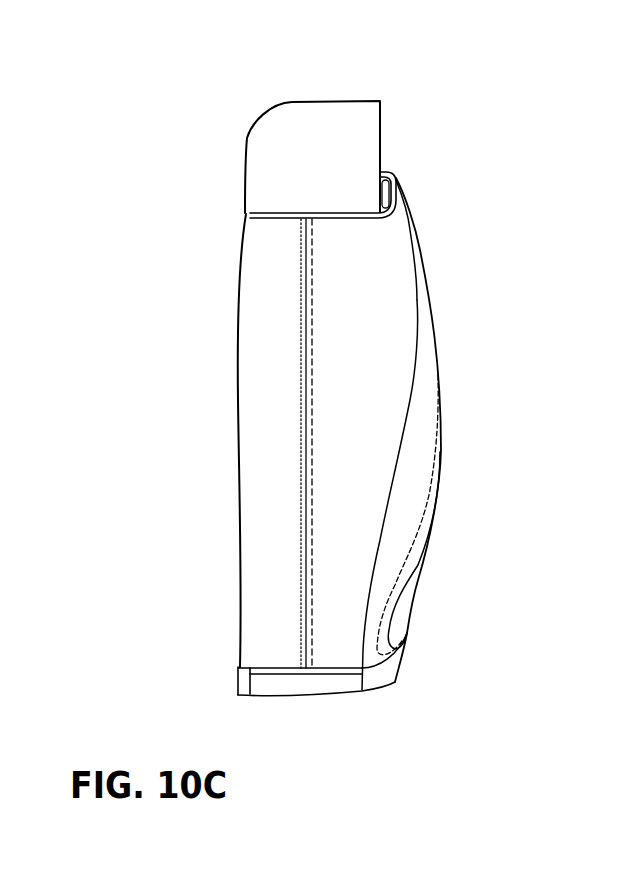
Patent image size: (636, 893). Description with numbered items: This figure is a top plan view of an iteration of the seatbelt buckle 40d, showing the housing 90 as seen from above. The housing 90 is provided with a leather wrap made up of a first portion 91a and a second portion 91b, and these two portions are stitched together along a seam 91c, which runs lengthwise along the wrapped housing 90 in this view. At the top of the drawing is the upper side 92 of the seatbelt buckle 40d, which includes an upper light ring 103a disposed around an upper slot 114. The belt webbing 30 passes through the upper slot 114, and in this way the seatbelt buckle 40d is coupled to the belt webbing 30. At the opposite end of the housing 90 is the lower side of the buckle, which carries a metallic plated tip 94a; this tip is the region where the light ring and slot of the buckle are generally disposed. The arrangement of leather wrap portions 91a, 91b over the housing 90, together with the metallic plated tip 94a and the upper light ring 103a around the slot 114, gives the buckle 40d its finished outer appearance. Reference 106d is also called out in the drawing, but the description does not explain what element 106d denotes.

The belt webbing 30 is at (340, 135).
The upper slot 114 is at (350, 212).
The upper light ring 103a is at (396, 178).
The upper side 92 is at (412, 221).
The housing 90 is at (437, 288).
The first portion 91a is at (377, 413).
The second portion 91b is at (268, 648).
The seam 91c is at (310, 637).
The seatbelt buckle 40d is at (463, 466).
The pocket strip 106d is at (408, 583).
The metallic plated tip 94a is at (395, 682).